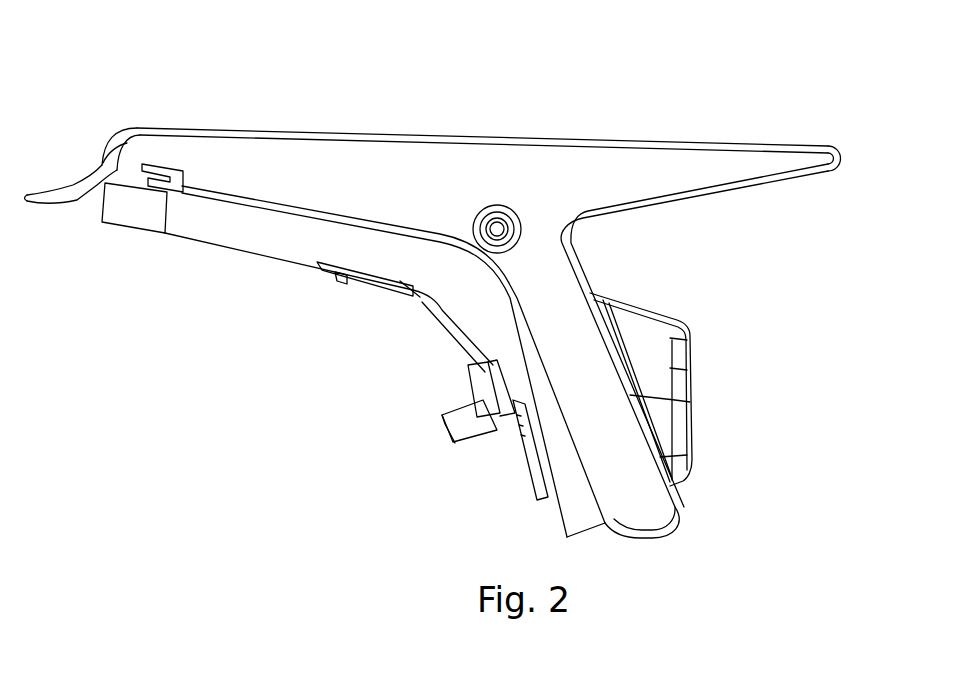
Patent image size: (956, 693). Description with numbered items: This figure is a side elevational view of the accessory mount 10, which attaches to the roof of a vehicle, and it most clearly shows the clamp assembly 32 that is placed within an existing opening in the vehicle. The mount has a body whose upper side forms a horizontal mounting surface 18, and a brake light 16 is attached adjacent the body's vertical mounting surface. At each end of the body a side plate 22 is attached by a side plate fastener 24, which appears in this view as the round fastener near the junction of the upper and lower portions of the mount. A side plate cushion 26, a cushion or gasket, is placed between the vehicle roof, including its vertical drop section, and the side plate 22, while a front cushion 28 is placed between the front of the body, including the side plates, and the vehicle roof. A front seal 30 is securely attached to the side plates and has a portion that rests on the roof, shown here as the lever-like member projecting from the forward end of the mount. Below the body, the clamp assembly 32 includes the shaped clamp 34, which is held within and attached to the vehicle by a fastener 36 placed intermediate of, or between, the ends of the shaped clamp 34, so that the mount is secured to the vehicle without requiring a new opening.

The accessory mount 10 is at (610, 78).
The brake light 16 is at (647, 320).
The horizontal mounting surface 18 is at (372, 137).
The side plate 22 is at (643, 183).
The side plate fastener 24 is at (503, 222).
The side plate cushion 26 is at (267, 242).
The front cushion 28 is at (132, 223).
The front seal 30 is at (68, 185).
The clamp assembly 32 is at (388, 422).
The shaped clamp 34 is at (427, 307).
The fastener 36 is at (477, 423).